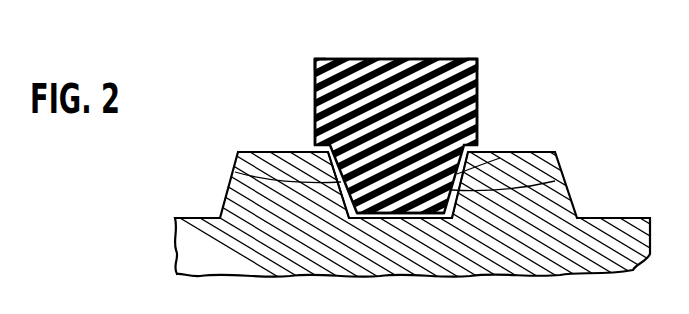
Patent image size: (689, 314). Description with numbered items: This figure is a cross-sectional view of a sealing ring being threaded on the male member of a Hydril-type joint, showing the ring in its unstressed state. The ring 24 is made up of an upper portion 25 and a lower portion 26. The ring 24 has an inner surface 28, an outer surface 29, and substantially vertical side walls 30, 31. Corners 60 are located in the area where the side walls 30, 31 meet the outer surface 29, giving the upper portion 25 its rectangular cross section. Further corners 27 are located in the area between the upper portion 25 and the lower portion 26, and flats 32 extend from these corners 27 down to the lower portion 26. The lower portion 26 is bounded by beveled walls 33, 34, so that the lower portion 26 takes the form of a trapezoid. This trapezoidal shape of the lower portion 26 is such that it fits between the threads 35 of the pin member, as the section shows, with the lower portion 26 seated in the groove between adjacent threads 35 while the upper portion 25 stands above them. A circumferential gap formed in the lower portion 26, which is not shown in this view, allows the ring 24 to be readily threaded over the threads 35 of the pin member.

The ring 24 is at (424, 62).
The upper portion 25 is at (478, 100).
The lower portion 26 is at (500, 158).
The corners 27 is at (472, 154).
The inner surface 28 is at (406, 219).
The outer surface 29 is at (395, 58).
The side wall 30 is at (314, 90).
The side wall 31 is at (478, 69).
The flats 32 is at (322, 150).
The beveled wall 33 is at (235, 172).
The beveled wall 34 is at (555, 181).
The threads 35 is at (242, 192).
The corners 60 is at (315, 58).